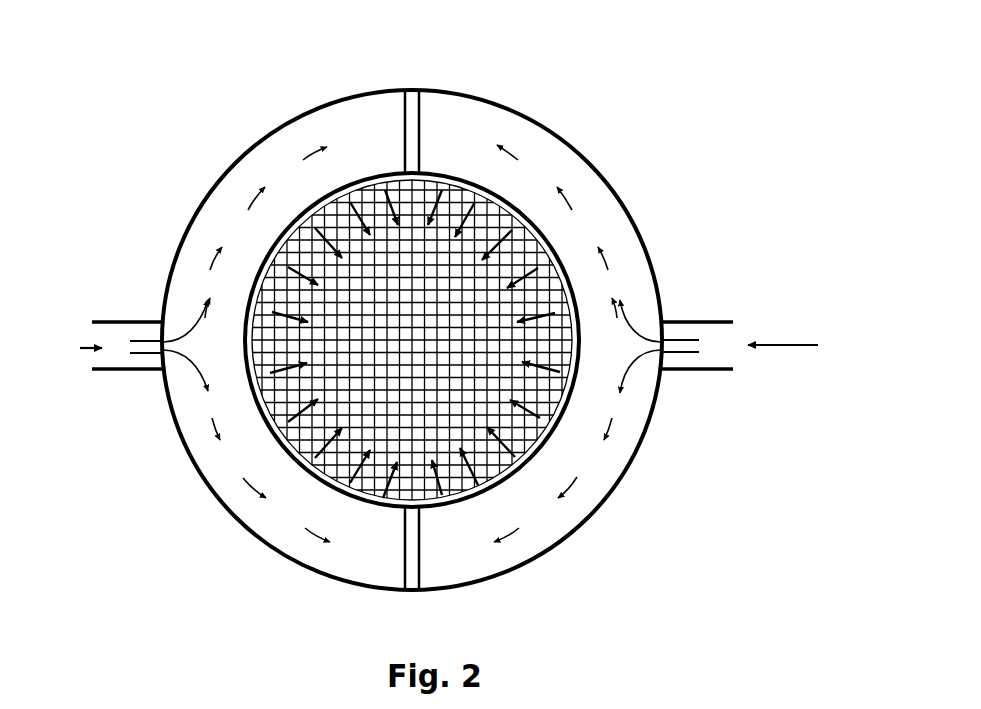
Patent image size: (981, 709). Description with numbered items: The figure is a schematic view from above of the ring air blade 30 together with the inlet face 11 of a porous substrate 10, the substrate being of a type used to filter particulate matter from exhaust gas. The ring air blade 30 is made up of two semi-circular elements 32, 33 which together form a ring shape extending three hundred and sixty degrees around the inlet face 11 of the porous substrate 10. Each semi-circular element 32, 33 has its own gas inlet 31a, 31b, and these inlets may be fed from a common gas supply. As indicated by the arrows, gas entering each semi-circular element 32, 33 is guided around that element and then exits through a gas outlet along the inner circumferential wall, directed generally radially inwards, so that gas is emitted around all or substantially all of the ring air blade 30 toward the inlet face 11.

The porous substrate 10 is at (490, 317).
The inlet face 11 is at (357, 381).
The ring air blade 30 is at (622, 91).
The gas inlet 31a is at (720, 320).
The gas inlet 31b is at (110, 320).
The semi-circular element 32 is at (608, 217).
The semi-circular element 33 is at (248, 152).